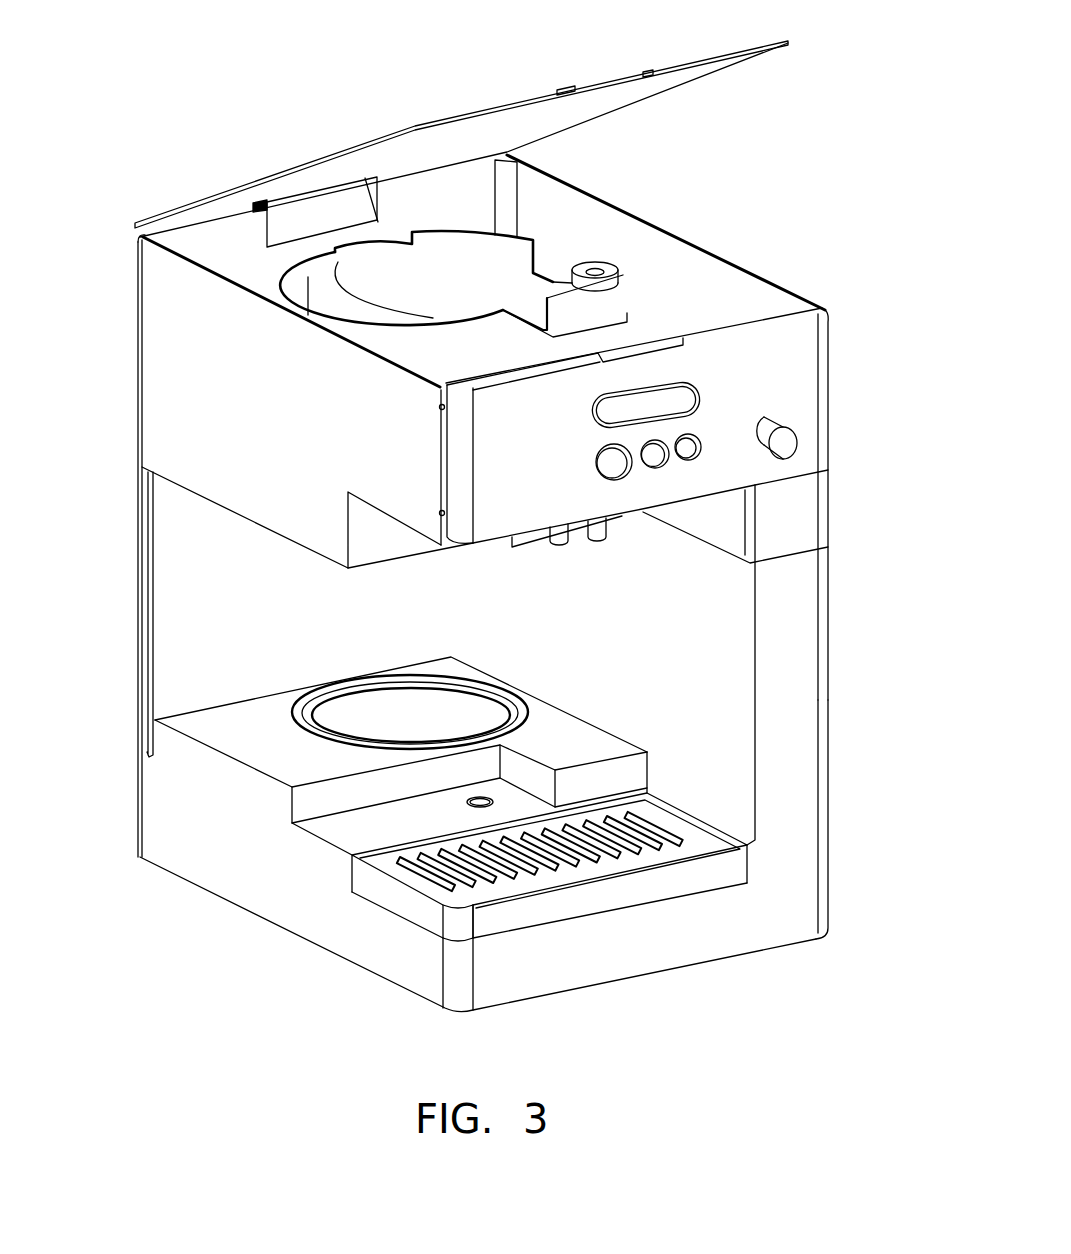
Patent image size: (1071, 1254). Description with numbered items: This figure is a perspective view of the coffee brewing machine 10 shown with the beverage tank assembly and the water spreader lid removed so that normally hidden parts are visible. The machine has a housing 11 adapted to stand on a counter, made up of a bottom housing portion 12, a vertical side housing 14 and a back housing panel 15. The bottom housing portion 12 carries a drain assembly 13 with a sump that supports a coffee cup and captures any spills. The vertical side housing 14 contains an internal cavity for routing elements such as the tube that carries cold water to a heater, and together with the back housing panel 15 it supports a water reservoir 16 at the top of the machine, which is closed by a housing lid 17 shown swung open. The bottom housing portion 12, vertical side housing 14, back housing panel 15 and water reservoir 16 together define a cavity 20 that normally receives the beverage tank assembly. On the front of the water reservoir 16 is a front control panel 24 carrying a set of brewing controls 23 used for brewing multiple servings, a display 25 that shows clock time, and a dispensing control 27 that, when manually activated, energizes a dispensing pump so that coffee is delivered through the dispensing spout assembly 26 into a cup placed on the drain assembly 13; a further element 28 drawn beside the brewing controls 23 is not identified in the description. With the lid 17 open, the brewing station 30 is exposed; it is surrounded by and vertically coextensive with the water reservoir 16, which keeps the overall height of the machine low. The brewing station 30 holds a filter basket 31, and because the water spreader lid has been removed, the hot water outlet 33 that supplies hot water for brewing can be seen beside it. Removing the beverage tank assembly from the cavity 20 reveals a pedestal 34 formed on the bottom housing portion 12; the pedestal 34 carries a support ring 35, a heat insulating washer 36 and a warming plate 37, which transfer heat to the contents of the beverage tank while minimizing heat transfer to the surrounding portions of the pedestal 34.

The coffee brewing machine 10 is at (682, 155).
The housing 11 is at (785, 733).
The bottom housing portion 12 is at (687, 937).
The drain assembly 13 is at (537, 910).
The vertical side housing 14 is at (785, 805).
The back housing panel 15 is at (200, 527).
The water reservoir 16 is at (158, 340).
The housing lid 17 is at (472, 151).
The cavity 20 is at (653, 627).
The brewing controls 23 is at (700, 433).
The front control panel 24 is at (780, 347).
The display 25 is at (648, 382).
The dispensing spout assembly 26 is at (583, 522).
The dispensing control 27 is at (787, 445).
The buttons 28 is at (628, 478).
The brewing station 30 is at (208, 242).
The filter basket 31 is at (314, 307).
The hot water outlet 33 is at (608, 262).
The pedestal 34 is at (312, 763).
The support ring 35 is at (317, 690).
The heat insulating washer 36 is at (368, 729).
The warming plate 37 is at (312, 722).